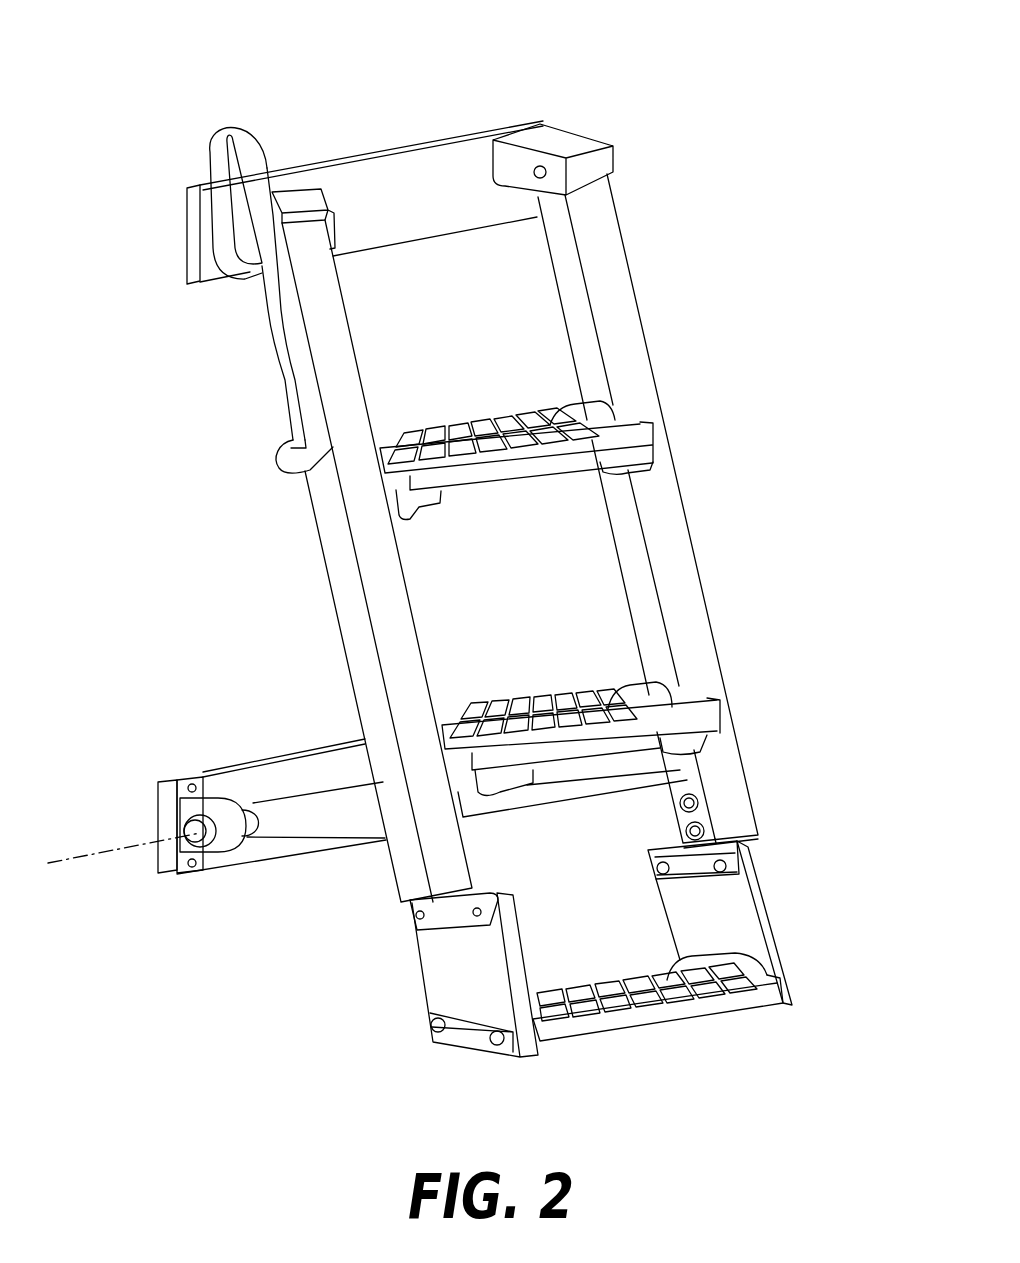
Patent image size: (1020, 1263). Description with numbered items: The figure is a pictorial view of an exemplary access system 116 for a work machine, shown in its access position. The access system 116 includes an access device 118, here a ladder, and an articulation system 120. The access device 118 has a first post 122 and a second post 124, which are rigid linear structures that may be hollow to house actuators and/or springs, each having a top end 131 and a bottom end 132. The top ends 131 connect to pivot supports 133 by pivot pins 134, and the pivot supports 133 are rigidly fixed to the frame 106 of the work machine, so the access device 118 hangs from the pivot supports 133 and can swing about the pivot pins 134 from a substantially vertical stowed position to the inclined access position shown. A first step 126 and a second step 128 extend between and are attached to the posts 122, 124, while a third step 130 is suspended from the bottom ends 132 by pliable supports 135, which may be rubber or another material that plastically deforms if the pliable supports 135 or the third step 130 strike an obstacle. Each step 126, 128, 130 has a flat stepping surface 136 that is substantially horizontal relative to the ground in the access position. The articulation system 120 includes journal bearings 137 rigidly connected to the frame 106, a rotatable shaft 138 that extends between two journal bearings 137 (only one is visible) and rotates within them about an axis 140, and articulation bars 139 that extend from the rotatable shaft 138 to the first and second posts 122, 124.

The frame 106 is at (433, 157).
The access system 116 is at (600, 86).
The access device 118 is at (705, 485).
The articulation system 120 is at (243, 922).
The first post 122 is at (322, 520).
The second post 124 is at (633, 360).
The first step 126 is at (500, 478).
The second step 128 is at (705, 718).
The third step 130 is at (670, 1015).
The top end 131 is at (320, 284).
The bottom end 132 is at (455, 868).
The pivot support 133 is at (300, 198).
The pivot pin 134 is at (537, 168).
The pliable support 135 is at (440, 973).
The flat stepping surface 136 is at (482, 432).
The journal bearing 137 is at (197, 800).
The rotatable shaft 138 is at (356, 796).
The articulation bar 139 is at (360, 830).
The axis 140 is at (108, 852).